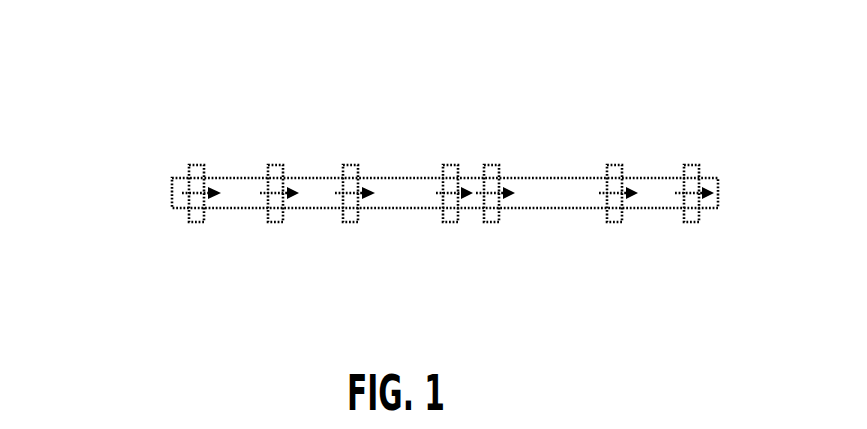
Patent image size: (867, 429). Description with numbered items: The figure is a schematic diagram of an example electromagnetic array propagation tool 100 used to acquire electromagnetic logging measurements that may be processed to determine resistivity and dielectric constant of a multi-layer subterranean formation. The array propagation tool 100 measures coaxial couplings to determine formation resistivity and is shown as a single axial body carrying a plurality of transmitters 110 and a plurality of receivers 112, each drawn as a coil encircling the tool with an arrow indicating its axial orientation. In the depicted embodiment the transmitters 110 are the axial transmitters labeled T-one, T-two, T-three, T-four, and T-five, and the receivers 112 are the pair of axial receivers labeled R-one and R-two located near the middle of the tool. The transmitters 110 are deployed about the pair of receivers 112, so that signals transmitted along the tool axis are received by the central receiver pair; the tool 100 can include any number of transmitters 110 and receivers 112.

The array propagation tool 100 is at (398, 184).
The transmitters 110 is at (192, 262).
The receivers 112 is at (448, 257).